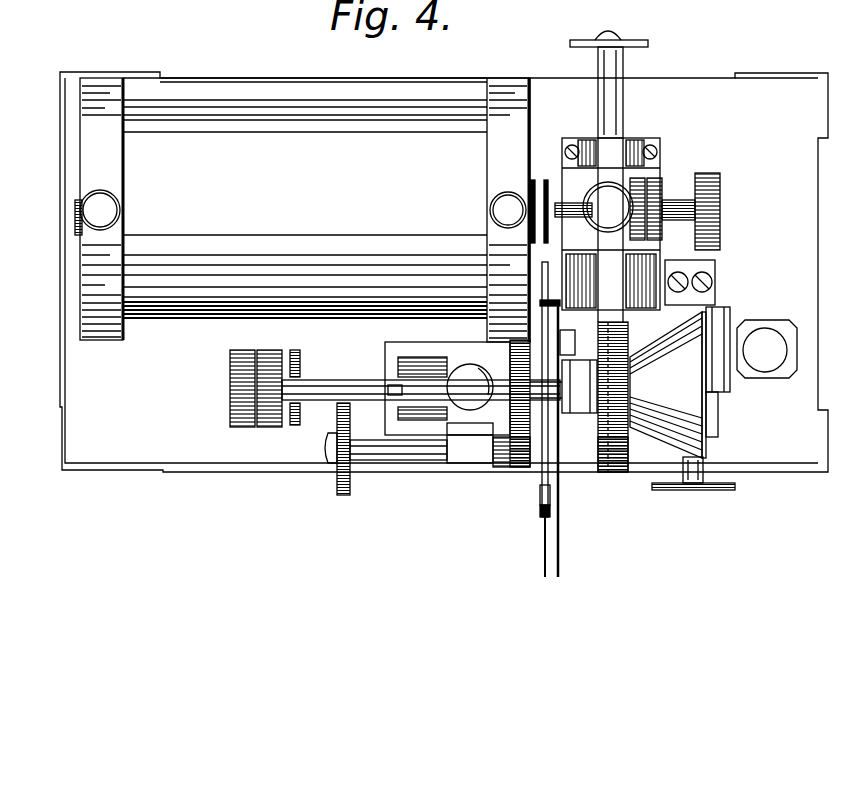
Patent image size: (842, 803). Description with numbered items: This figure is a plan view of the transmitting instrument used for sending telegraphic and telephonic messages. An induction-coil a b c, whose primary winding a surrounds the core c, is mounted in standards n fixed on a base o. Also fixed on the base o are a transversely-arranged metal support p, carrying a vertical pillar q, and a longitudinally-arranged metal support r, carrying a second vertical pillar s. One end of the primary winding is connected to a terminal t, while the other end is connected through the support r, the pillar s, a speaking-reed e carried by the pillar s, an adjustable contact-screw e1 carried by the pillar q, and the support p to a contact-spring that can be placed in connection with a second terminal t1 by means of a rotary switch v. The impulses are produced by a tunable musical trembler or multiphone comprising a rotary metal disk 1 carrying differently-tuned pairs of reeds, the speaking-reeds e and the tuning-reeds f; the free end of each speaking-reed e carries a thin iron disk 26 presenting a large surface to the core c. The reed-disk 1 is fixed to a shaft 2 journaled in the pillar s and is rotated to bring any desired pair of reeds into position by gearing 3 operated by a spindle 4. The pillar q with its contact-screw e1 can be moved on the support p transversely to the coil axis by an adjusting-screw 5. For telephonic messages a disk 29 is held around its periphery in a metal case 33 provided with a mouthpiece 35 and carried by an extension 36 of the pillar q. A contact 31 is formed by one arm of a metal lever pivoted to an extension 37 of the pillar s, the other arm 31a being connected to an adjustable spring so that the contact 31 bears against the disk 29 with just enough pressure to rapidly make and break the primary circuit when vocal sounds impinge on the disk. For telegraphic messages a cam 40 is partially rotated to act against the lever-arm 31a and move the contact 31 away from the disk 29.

The rotary metal disk 1 is at (541, 497).
The shaft 2 is at (331, 385).
The gearing 3 is at (515, 466).
The spindle 4 is at (418, 455).
The adjusting-screw 5 is at (599, 150).
The thin iron disk 26 is at (545, 566).
The disk 29 is at (600, 455).
The adjustable contact 31 is at (590, 412).
The lever-arm 31a is at (308, 388).
The metal case 33 is at (616, 471).
The mouthpiece 35 is at (668, 385).
The extension of the metal pillar q 36 is at (608, 219).
The extension of the metal pillar s 37 is at (493, 367).
The cam 40 is at (480, 430).
The primary winding a is at (305, 209).
The induction-coil winding b is at (305, 131).
The core c is at (76, 222).
The speaking-reed e is at (548, 249).
The adjustable contact-screw e1 is at (680, 205).
The tuning-reed f is at (545, 433).
The standards n is at (305, 210).
The base o is at (444, 272).
The transversely-arranged metal support p is at (632, 150).
The vertical pillar q is at (608, 207).
The longitudinally-arranged metal support r is at (447, 378).
The second vertical pillar s is at (470, 387).
The terminal t is at (597, 331).
The second terminal t1 is at (767, 349).
The rotary switch v is at (710, 316).